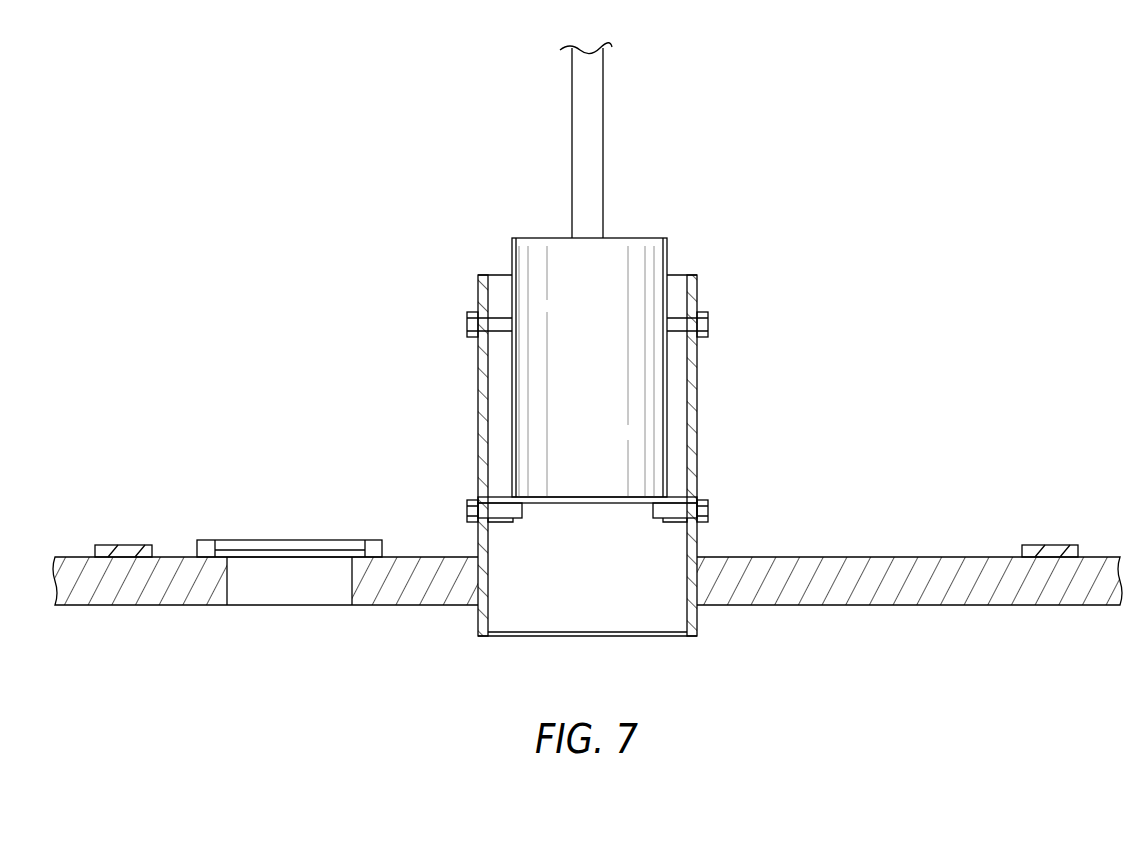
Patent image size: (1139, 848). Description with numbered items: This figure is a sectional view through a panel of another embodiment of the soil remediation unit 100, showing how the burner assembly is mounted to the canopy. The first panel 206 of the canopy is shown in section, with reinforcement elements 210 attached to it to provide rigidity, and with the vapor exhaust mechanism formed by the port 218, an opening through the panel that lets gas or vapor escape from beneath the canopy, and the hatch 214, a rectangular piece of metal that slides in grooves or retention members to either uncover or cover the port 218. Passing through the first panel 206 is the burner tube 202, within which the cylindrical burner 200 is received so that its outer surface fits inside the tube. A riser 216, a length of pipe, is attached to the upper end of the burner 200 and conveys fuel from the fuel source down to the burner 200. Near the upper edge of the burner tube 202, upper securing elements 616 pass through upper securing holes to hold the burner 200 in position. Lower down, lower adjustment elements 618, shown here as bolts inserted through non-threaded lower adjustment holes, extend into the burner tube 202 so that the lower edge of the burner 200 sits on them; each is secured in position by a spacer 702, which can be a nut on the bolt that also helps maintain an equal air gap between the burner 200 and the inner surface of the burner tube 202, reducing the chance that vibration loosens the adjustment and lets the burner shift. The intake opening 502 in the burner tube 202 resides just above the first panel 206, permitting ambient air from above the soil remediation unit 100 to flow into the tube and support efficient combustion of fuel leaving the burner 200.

The soil remediation unit 100 is at (933, 268).
The burner 200 is at (667, 263).
The burner tube 202 is at (700, 413).
The first panel 206 is at (913, 598).
The reinforcement elements 210 is at (129, 549).
The hatch 214 is at (290, 547).
The riser 216 is at (603, 100).
The port 218 is at (302, 598).
The intake opening 502 is at (702, 494).
The upper securing element 616 is at (710, 318).
The lower adjustment element 618 is at (710, 517).
The spacer 702 is at (505, 522).